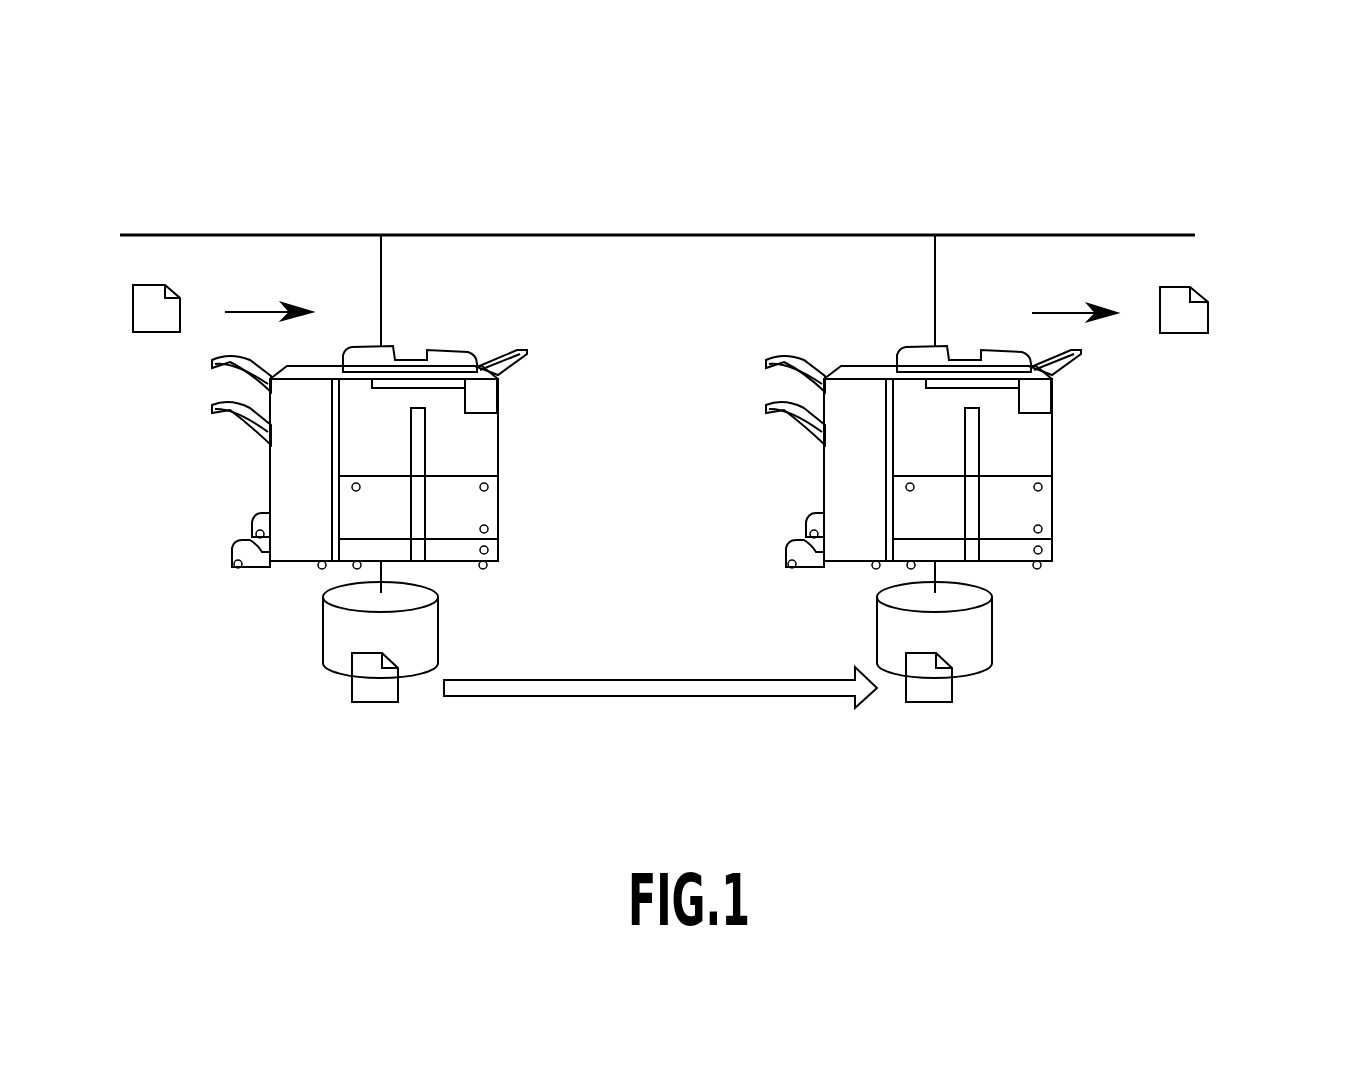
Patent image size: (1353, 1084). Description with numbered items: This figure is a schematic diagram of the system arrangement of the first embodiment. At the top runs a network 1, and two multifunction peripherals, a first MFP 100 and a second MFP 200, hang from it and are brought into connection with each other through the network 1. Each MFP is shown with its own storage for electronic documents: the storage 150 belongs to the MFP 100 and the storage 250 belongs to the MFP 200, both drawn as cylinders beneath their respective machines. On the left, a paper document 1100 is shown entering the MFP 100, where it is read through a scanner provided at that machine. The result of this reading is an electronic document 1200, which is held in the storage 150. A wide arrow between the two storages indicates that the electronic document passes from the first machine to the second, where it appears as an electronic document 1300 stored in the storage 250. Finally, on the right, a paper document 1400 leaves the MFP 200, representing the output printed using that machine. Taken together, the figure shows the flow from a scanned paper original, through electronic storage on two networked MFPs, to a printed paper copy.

The network 1 is at (792, 235).
The MFP 100 is at (498, 505).
The storage 150 is at (438, 622).
The MFP 200 is at (1052, 505).
The storage 250 is at (992, 622).
The paper document 1100 is at (155, 333).
The electronic document 1200 is at (373, 703).
The electronic document 1300 is at (927, 703).
The paper document 1400 is at (1197, 335).